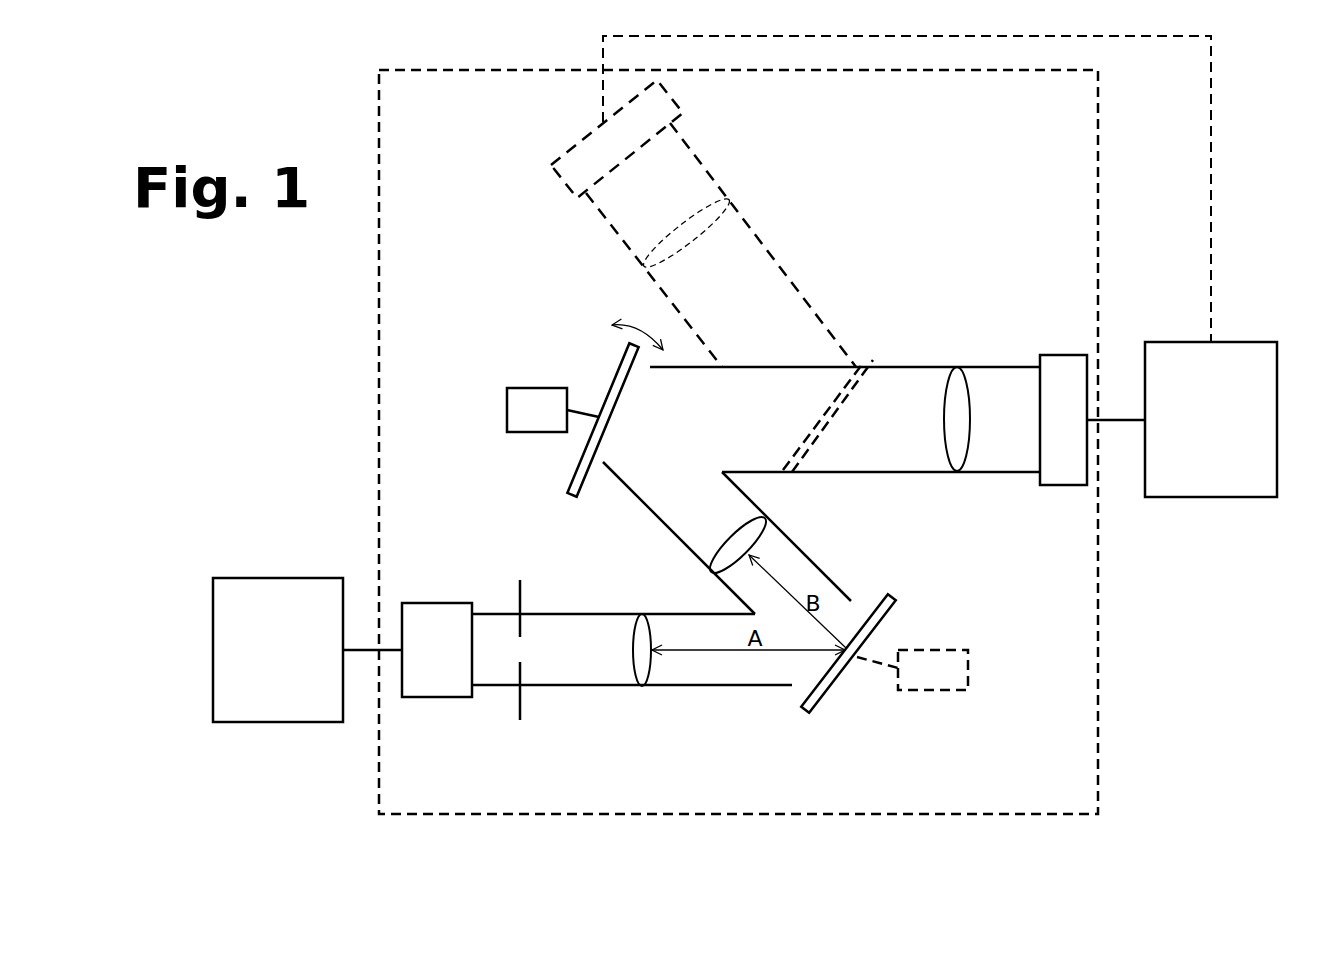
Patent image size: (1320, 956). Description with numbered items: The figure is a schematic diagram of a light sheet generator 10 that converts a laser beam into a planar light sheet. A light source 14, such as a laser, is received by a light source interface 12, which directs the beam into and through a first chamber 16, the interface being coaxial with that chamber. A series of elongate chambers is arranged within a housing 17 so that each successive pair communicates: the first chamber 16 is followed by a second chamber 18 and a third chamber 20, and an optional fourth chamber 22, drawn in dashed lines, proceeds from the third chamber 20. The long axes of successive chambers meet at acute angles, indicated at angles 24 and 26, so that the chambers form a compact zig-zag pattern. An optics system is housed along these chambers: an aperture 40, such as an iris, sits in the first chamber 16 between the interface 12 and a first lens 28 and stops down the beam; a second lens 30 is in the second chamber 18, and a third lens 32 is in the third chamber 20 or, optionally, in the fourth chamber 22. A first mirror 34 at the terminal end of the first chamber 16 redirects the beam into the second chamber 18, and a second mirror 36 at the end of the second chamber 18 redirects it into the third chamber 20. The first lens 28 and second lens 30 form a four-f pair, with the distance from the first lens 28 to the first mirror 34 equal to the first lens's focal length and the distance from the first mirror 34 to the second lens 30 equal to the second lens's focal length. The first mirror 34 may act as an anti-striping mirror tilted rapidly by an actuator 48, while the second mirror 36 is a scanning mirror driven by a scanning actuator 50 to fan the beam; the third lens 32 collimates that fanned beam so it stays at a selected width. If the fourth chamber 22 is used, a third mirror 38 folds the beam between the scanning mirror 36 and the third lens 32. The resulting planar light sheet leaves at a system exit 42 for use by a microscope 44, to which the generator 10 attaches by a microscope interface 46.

The light sheet generator 10 is at (1192, 785).
The light source interface 12 is at (424, 662).
The light source 14 is at (265, 694).
The first chamber 16 is at (557, 662).
The housing 17 is at (1100, 690).
The second chamber 18 is at (782, 582).
The third chamber 20 is at (759, 425).
The fourth chamber 22 is at (710, 294).
The angle 24 is at (668, 610).
The angle 26 is at (813, 473).
The first lens 28 is at (640, 647).
The second lens 30 is at (737, 540).
The third lens 32 is at (957, 402).
The first mirror 34 is at (873, 625).
The second mirror 36 is at (613, 382).
The third mirror 38 is at (853, 388).
The aperture 40 is at (518, 625).
The system exit 42 is at (1105, 463).
The microscope 44 is at (1198, 462).
The microscope interface 46 is at (1050, 412).
The actuator 48 is at (919, 684).
The scanning actuator 50 is at (524, 422).